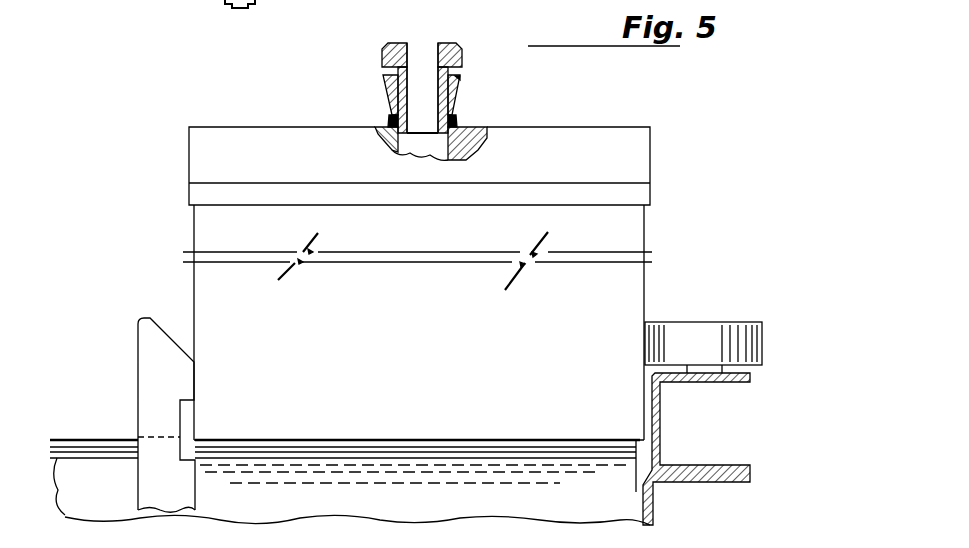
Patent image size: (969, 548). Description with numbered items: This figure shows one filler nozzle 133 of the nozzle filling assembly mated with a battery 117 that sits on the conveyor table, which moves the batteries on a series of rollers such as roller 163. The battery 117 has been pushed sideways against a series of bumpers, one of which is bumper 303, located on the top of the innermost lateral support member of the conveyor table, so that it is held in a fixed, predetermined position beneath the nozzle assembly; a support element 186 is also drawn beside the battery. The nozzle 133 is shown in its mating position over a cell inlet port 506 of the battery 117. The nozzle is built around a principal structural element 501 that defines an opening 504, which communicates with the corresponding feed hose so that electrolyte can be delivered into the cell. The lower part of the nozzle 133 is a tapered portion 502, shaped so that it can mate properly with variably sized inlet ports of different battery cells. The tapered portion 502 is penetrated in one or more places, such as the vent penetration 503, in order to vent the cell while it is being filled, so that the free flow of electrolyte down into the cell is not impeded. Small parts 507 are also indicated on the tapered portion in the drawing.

The battery 117 is at (388, 358).
The nozzle 133 is at (432, 107).
The roller 163 is at (437, 470).
The support member 186 is at (148, 360).
The bumper 303 is at (690, 336).
The principal structural element 501 is at (430, 96).
The tapered portion 502 is at (386, 84).
The vent penetration 503 is at (396, 70).
The opening 504 is at (418, 62).
The cell inlet port 506 is at (437, 147).
The seal ring 507 is at (459, 78).